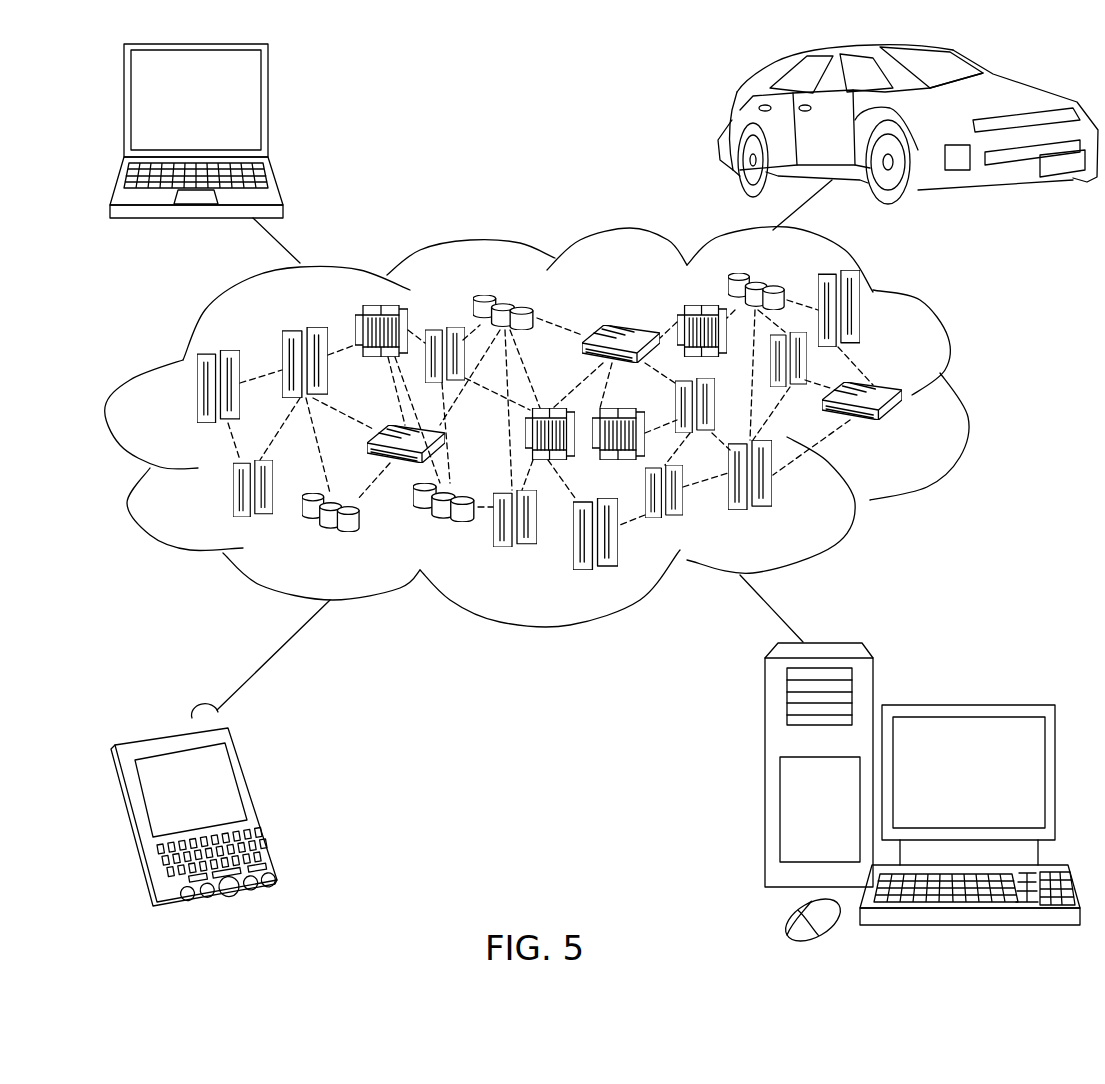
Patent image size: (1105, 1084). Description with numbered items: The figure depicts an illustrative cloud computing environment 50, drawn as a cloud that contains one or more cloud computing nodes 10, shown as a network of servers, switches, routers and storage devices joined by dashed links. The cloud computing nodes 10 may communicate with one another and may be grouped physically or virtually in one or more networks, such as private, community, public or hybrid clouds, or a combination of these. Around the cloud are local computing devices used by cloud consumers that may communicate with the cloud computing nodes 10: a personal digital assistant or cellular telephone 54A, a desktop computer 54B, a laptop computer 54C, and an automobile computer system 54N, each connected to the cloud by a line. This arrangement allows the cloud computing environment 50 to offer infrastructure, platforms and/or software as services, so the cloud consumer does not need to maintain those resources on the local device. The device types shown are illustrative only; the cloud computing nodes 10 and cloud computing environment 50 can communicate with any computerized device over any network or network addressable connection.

The cloud computing node 10 is at (903, 430).
The cloud computing environment 50 is at (566, 427).
The personal digital assistant or cellular telephone 54A is at (257, 803).
The desktop computer 54B is at (967, 703).
The laptop computer 54C is at (268, 108).
The automobile computer system 54N is at (733, 127).